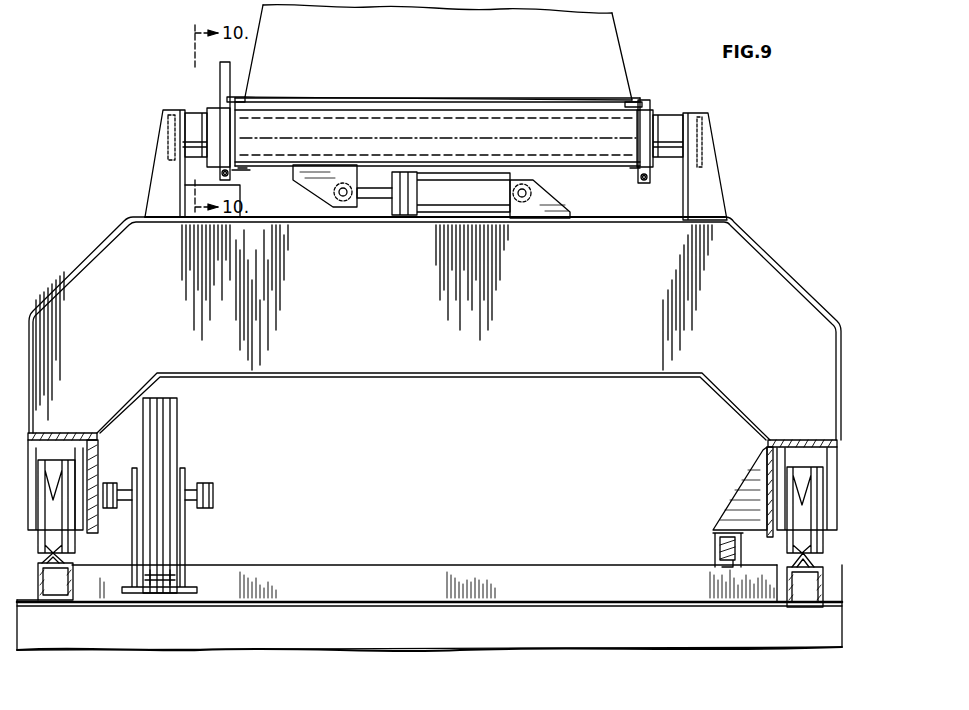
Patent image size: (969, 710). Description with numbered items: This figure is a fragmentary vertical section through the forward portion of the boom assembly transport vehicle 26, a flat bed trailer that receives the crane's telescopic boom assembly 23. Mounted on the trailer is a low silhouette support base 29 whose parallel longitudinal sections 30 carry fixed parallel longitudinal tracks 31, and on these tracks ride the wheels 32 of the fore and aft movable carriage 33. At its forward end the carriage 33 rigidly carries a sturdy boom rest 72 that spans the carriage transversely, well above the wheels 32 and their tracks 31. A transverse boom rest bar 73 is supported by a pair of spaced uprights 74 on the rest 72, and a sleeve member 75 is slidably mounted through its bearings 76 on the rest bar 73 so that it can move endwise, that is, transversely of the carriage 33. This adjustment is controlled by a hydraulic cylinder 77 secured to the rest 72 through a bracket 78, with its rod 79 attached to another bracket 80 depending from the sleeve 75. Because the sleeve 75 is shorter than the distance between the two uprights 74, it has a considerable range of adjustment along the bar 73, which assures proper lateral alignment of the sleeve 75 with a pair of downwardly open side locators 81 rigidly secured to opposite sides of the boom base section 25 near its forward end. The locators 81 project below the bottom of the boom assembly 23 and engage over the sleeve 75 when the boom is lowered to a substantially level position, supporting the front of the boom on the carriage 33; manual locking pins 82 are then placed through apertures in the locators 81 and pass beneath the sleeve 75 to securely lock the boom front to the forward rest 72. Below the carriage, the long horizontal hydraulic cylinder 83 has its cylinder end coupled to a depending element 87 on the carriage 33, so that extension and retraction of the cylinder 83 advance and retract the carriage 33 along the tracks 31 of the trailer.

The telescopic boom assembly 23 is at (613, 41).
The boom base section 25 is at (258, 27).
The boom assembly transport vehicle 26 is at (717, 608).
The support base 29 is at (553, 585).
The longitudinal sections 30 is at (52, 583).
The longitudinal tracks 31 is at (45, 562).
The carriage wheels 32 is at (44, 505).
The carriage 33 is at (768, 444).
The boom rest 72 is at (762, 266).
The boom rest bar 73 is at (680, 125).
The uprights 74 is at (155, 183).
The sleeve member 75 is at (610, 165).
The bearings 76 is at (244, 166).
The hydraulic cylinder 77 is at (497, 184).
The bracket 78 is at (535, 212).
The cylinder rod 79 is at (373, 198).
The bracket 80 is at (335, 200).
The locators 81 is at (226, 125).
The locking pins 82 is at (229, 176).
The horizontal hydraulic cylinder 83 is at (716, 557).
The depending element 87 is at (713, 540).